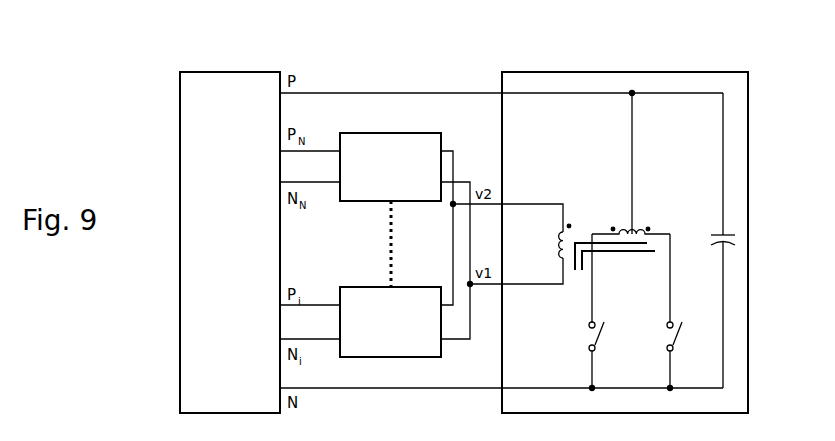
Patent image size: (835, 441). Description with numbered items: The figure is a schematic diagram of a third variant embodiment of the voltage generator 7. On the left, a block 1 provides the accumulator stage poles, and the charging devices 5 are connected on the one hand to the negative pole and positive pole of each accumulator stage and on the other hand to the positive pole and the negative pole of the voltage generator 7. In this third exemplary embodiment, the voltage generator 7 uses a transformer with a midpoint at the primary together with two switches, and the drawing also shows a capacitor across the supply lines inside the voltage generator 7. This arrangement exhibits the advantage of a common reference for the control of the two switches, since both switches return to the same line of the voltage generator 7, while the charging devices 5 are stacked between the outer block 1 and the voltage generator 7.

The DC voltage source 1 is at (233, 70).
The charging device 5 is at (414, 131).
The voltage generator 7 is at (528, 71).